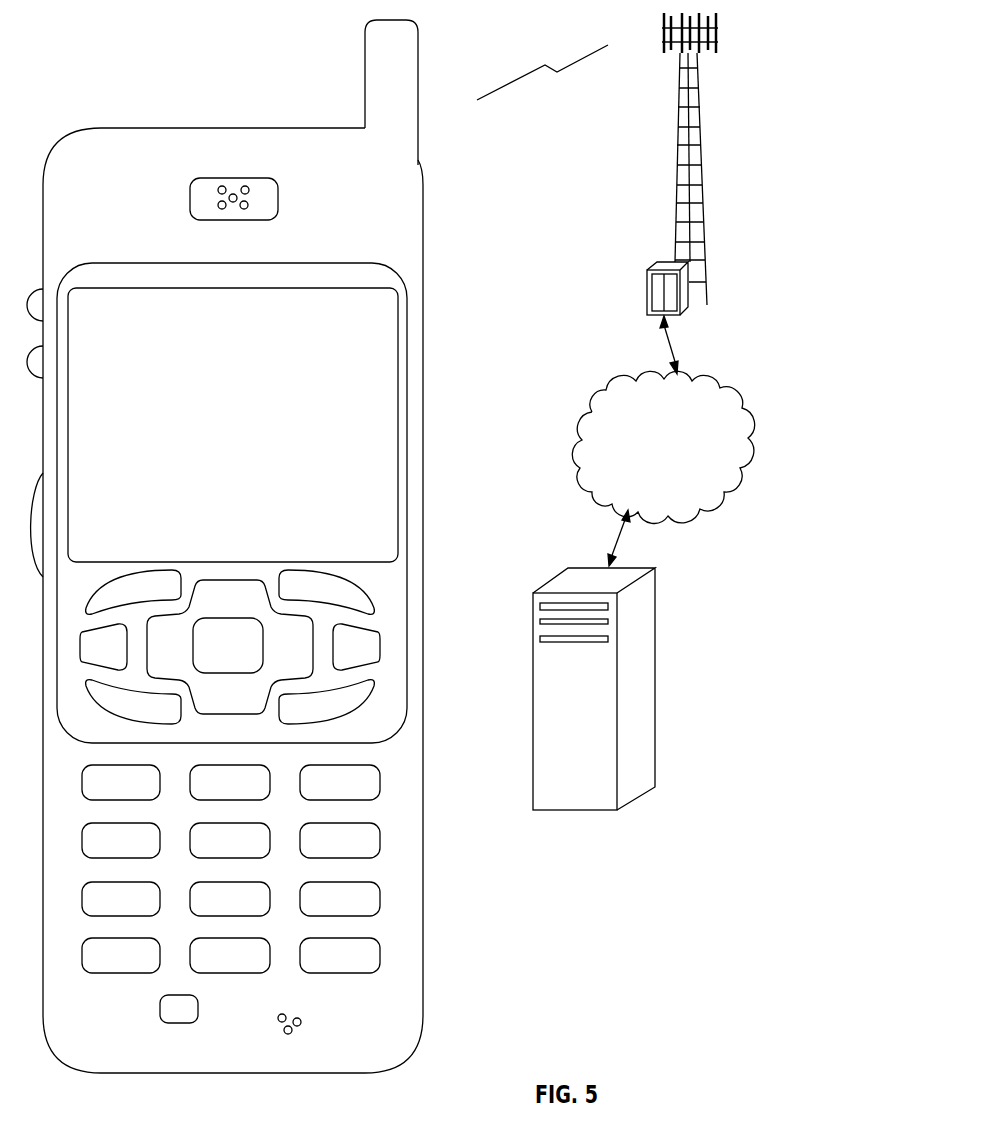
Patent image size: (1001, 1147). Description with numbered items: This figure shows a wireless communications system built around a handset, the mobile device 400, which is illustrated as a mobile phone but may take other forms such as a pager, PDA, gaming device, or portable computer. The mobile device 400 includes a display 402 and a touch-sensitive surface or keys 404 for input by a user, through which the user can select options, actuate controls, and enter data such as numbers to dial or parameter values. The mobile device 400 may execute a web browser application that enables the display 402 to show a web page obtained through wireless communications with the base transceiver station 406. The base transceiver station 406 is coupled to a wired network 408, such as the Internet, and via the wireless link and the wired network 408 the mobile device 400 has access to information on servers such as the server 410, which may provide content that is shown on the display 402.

The mobile device 400 is at (88, 1070).
The display 402 is at (398, 300).
The keys 404 is at (430, 958).
The base transceiver station 406 is at (675, 176).
The wired network 408 is at (590, 498).
The server 410 is at (578, 811).